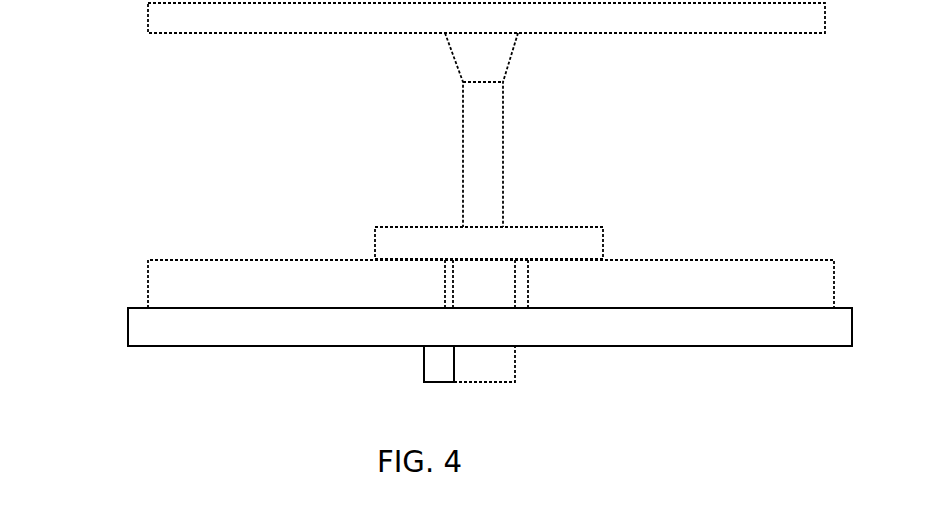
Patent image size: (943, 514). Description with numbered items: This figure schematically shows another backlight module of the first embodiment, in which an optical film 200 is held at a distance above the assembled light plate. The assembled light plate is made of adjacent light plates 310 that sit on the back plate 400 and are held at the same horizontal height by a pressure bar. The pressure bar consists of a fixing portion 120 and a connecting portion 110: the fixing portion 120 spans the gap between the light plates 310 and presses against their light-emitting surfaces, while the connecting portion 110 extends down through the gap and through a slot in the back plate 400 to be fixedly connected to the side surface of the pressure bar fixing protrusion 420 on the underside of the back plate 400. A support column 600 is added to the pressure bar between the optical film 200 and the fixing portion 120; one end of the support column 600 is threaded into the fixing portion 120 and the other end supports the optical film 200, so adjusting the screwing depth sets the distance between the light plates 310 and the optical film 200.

The optical film 200 is at (250, 18).
The support column 600 is at (485, 179).
The fixing portion 120 is at (452, 245).
The light plate 310 is at (222, 277).
The back plate 400 is at (210, 325).
The pressure bar fixing protrusion 420 is at (435, 366).
The connecting portion 110 is at (487, 363).